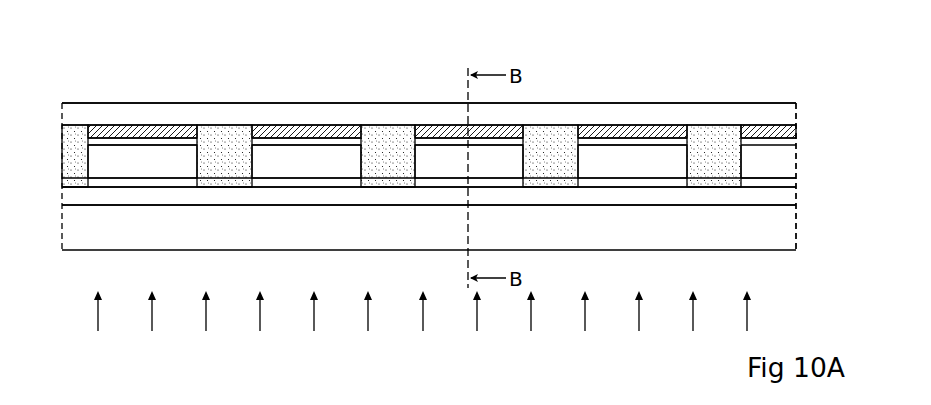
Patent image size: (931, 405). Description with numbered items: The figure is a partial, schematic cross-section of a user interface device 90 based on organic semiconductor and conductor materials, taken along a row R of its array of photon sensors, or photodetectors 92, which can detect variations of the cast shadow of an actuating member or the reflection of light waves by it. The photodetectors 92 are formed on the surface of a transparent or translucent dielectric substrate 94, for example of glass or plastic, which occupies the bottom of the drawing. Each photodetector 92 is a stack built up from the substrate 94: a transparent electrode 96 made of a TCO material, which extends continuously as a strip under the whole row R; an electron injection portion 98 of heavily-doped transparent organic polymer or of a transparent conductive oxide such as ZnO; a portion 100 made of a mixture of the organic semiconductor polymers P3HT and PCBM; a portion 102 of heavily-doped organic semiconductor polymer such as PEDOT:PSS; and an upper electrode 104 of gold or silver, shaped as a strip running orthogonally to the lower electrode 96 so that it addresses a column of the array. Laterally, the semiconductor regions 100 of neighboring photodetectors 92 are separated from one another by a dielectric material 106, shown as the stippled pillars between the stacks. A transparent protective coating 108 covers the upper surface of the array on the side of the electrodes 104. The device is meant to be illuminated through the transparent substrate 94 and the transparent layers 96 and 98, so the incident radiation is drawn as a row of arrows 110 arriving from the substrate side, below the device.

The user interface device 90 is at (64, 67).
The photodetector 92 is at (141, 97).
The substrate 94 is at (91, 227).
The transparent electrode 96 is at (226, 200).
The electron injection portion 98 is at (300, 187).
The semiconductor portion 100 is at (272, 156).
The heavily-doped organic semiconductor polymer portion 102 is at (292, 140).
The upper electrode 104 is at (341, 134).
The dielectric material 106 is at (388, 158).
The transparent protective coating 108 is at (778, 113).
The incident radiation arrows 110 is at (313, 320).
The row R is at (799, 158).